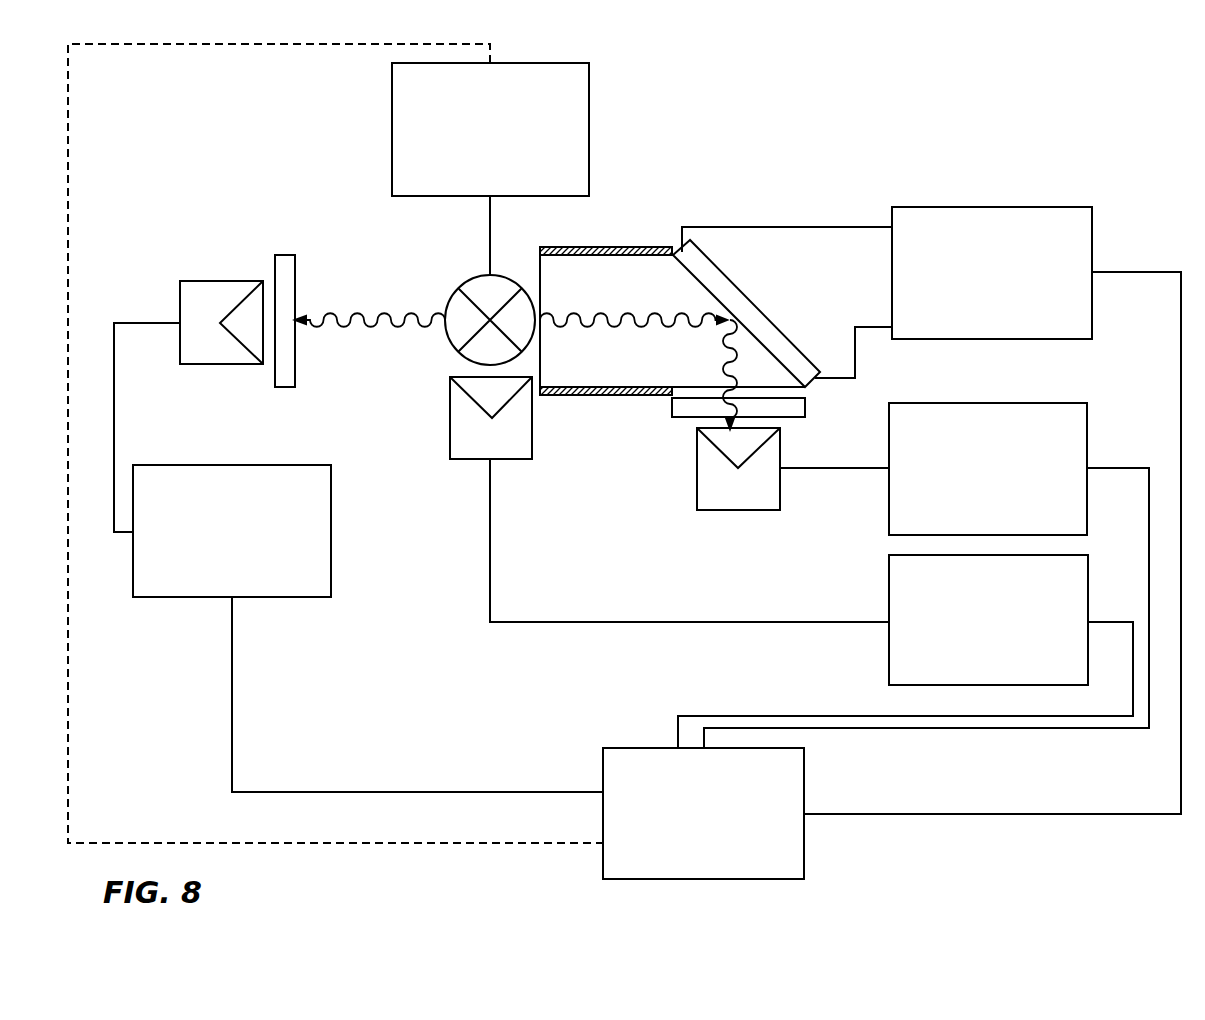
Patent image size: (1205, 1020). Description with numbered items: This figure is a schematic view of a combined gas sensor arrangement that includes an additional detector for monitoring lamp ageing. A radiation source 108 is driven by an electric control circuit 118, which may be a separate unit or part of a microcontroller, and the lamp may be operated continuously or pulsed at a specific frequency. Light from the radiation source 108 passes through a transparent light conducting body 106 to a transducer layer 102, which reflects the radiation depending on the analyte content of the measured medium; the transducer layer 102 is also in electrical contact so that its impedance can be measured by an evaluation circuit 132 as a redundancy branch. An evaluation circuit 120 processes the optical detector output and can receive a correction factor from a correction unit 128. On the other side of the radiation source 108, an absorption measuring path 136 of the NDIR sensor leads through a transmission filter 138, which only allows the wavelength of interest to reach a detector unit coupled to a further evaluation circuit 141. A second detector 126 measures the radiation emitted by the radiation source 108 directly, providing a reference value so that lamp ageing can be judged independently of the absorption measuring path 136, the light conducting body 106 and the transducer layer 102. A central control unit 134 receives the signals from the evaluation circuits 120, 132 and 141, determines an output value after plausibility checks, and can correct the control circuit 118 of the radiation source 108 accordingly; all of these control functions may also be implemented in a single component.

The transducer layer 102 is at (715, 272).
The light conducting body 106 is at (614, 364).
The radiation source 108 is at (447, 343).
The control circuit 118 is at (567, 188).
The evaluation circuit 120 is at (1061, 527).
The second detector 126 is at (452, 452).
The correction unit 128 is at (1061, 680).
The evaluation circuit 132 is at (1061, 332).
The central control unit 134 is at (761, 864).
The absorption measuring path 136 is at (384, 302).
The transmission filter 138 is at (280, 264).
The evaluation circuit 141 is at (297, 577).